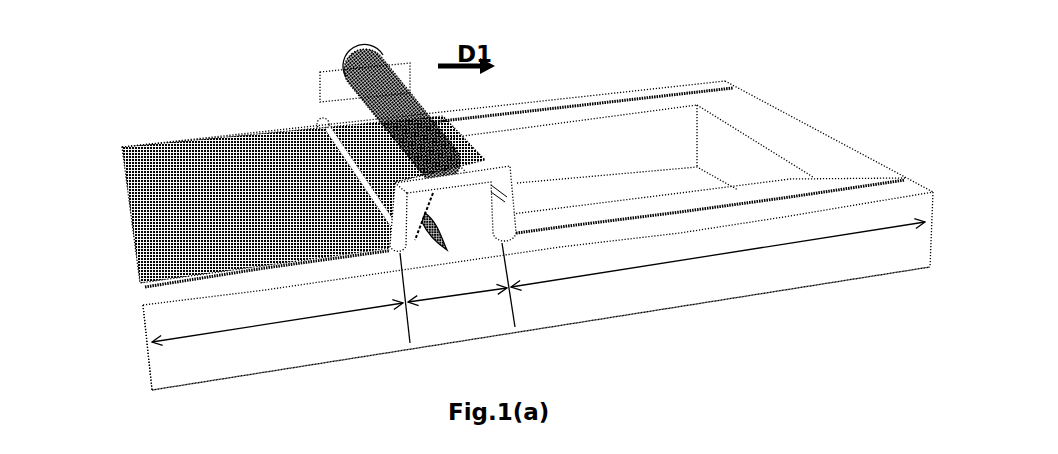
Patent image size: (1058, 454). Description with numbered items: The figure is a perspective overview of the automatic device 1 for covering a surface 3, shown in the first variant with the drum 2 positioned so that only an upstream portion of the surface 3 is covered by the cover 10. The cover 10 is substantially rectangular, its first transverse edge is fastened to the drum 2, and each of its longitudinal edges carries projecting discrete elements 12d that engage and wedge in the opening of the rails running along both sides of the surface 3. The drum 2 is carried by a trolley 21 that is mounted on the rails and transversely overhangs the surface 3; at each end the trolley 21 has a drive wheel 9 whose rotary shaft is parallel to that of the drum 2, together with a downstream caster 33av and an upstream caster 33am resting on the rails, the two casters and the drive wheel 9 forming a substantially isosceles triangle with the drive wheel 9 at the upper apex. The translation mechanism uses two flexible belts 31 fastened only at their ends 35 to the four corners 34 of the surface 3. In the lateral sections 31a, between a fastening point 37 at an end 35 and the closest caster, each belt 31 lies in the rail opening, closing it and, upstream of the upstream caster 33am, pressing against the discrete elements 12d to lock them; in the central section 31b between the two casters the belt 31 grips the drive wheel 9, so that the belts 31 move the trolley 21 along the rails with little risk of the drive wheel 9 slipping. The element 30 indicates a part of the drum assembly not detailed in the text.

The automatic device 1 is at (811, 88).
The drum 2 is at (402, 113).
The surface 3 is at (671, 124).
The drive wheel 9 is at (445, 162).
The cover 10 is at (220, 199).
The discrete elements 12d is at (438, 232).
The trolley 21 is at (318, 82).
The lever head 30 is at (349, 57).
The flexible belts 31 is at (264, 271).
The lateral sections 31a is at (538, 296).
The central section 31b is at (457, 312).
The upstream caster 33am is at (396, 252).
The downstream caster 33av is at (508, 222).
The corners 34 is at (190, 137).
The ends 35 is at (141, 285).
The fastening point 37 is at (138, 146).